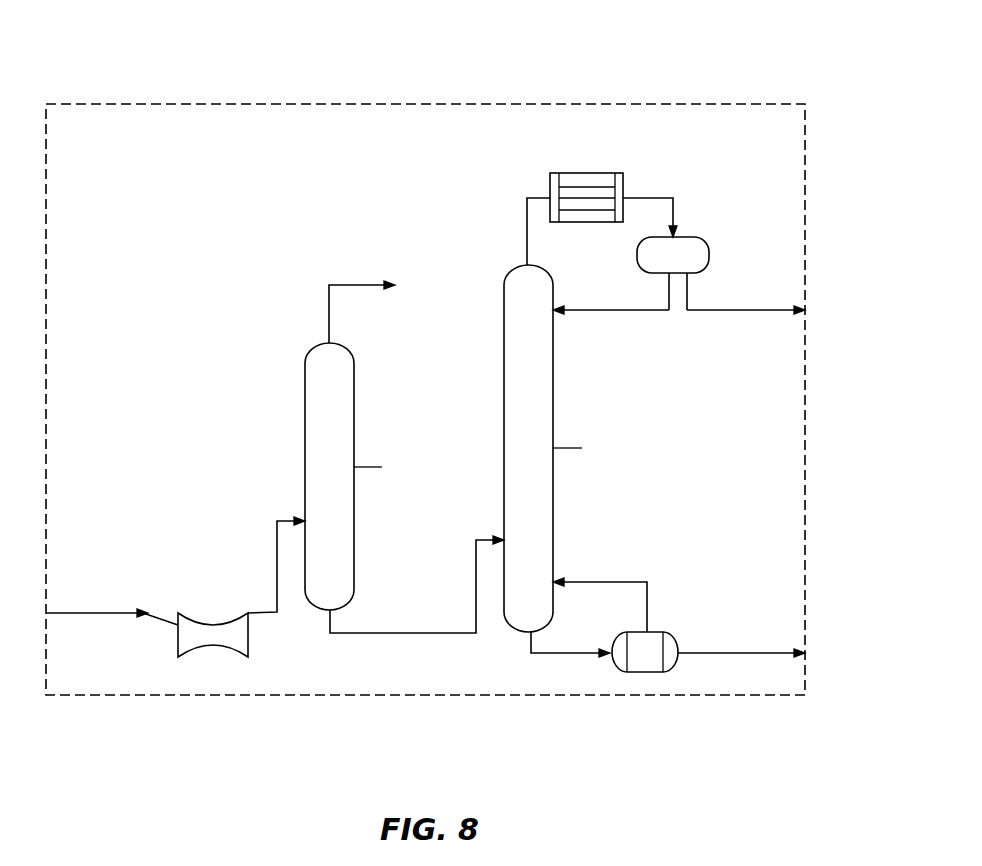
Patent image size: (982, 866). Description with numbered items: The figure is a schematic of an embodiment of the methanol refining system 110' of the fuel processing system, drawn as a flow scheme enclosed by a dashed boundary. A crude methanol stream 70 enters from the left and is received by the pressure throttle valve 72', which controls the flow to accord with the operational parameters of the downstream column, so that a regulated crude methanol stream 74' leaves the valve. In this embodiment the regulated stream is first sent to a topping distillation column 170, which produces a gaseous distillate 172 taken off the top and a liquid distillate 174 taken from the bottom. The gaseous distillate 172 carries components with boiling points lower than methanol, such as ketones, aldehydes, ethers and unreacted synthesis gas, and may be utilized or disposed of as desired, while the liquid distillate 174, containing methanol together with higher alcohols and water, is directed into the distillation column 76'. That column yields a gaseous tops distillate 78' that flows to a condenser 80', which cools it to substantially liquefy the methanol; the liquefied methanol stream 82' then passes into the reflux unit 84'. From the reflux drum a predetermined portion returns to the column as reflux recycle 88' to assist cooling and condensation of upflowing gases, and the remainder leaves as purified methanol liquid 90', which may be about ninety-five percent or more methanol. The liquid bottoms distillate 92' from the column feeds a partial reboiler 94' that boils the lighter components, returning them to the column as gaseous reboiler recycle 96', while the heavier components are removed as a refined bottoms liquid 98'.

The methanol refining system 110' is at (437, 360).
The crude methanol stream 70 is at (118, 625).
The pressure throttle valve 72' is at (207, 605).
The regulated crude methanol stream 74' is at (268, 565).
The topping distillation column 170 is at (305, 432).
The gaseous distillate 172 is at (320, 298).
The liquid distillate 174 is at (428, 643).
The distillation column 76' is at (569, 448).
The gaseous tops distillate 78' is at (515, 231).
The condenser 80' is at (600, 175).
The liquefied methanol stream 82' is at (650, 200).
The reflux unit 84' is at (699, 254).
The reflux recycle 88' is at (611, 324).
The purified methanol liquid 90' is at (746, 324).
The liquid bottoms distillate 92' is at (570, 683).
The partial reboiler 94' is at (667, 623).
The gaseous reboiler recycle 96' is at (600, 591).
The refined bottoms liquid 98' is at (741, 693).